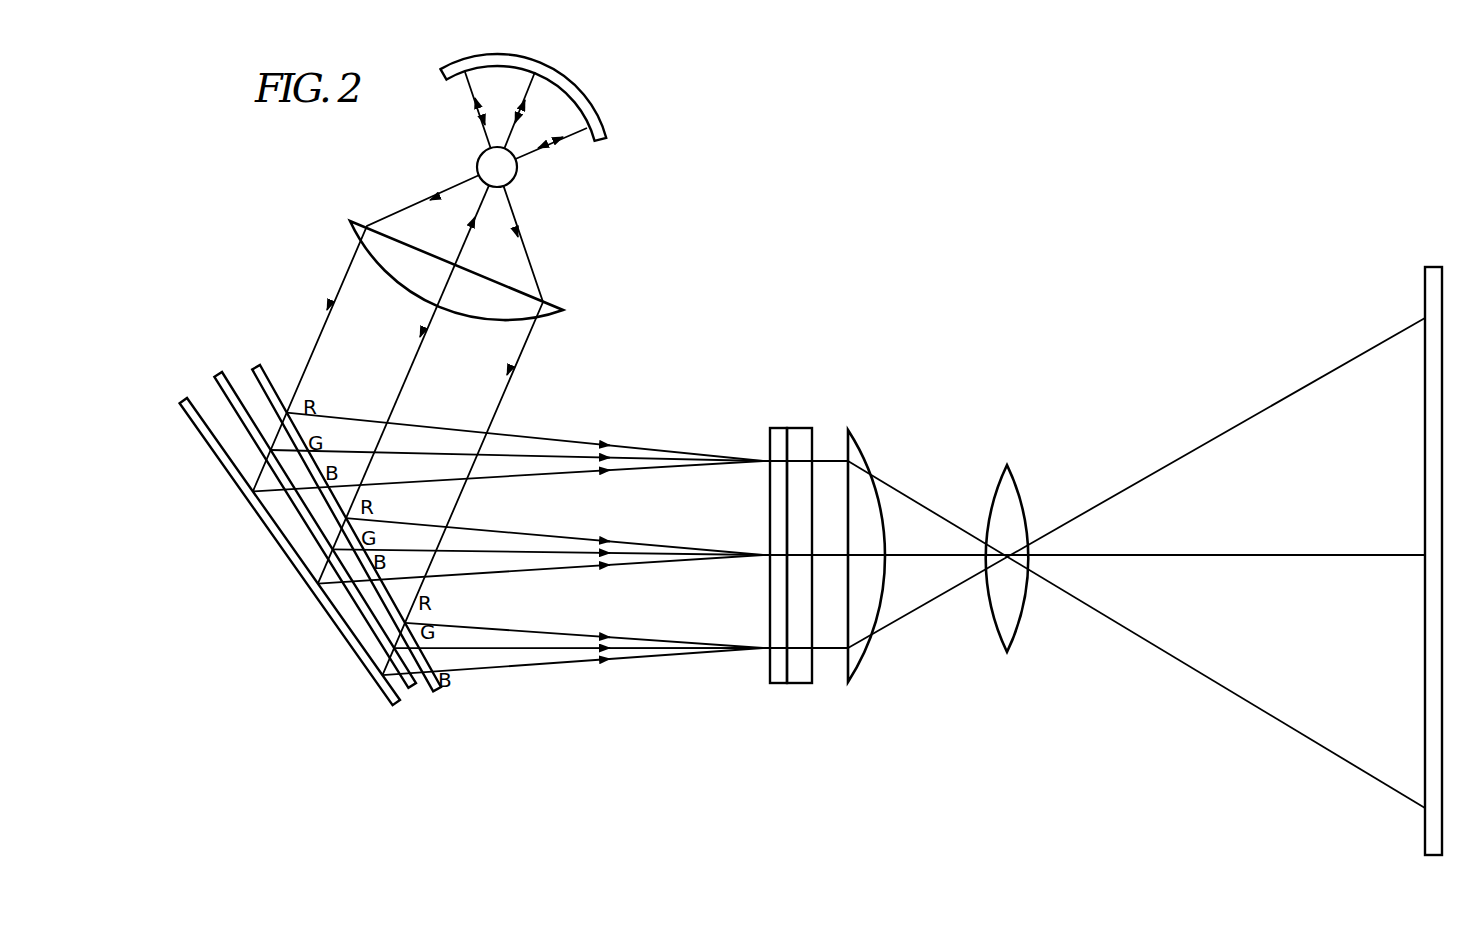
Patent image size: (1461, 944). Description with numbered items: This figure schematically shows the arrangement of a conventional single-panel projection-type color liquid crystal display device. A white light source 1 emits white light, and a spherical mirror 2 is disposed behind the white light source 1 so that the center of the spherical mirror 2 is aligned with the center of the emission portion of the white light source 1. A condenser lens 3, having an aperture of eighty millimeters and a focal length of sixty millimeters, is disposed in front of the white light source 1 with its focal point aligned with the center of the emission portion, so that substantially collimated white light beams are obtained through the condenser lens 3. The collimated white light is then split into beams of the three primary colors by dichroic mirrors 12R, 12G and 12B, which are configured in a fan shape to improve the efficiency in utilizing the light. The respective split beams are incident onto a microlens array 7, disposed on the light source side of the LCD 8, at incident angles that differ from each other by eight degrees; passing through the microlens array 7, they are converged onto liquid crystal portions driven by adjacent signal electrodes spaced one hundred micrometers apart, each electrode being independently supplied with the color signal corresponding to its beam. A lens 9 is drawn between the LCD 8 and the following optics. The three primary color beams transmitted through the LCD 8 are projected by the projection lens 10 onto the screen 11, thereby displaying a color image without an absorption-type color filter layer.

The white light source 1 is at (518, 174).
The spherical mirror 2 is at (603, 131).
The condenser lens 3 is at (350, 221).
The microlens array 7 is at (780, 428).
The LCD 8 is at (803, 428).
The field lens 9 is at (858, 443).
The projection lens 10 is at (1007, 465).
The screen 11 is at (1427, 288).
The dichroic mirror 12R is at (255, 364).
The dichroic mirror 12G is at (219, 372).
The dichroic mirror 12B is at (183, 400).